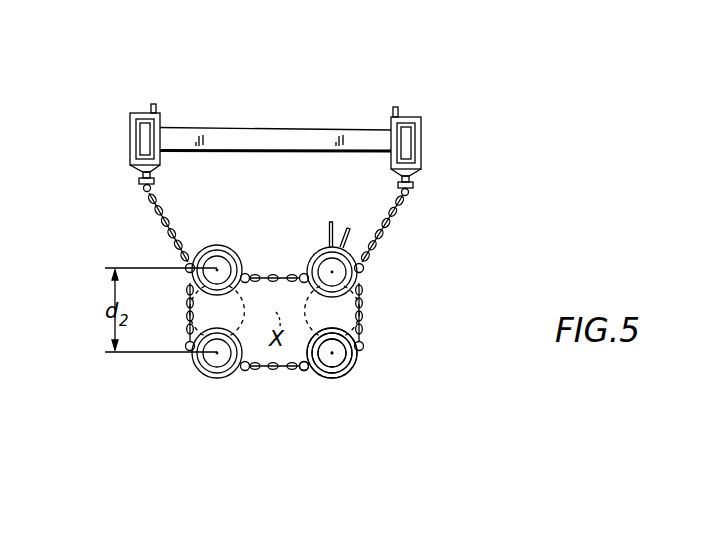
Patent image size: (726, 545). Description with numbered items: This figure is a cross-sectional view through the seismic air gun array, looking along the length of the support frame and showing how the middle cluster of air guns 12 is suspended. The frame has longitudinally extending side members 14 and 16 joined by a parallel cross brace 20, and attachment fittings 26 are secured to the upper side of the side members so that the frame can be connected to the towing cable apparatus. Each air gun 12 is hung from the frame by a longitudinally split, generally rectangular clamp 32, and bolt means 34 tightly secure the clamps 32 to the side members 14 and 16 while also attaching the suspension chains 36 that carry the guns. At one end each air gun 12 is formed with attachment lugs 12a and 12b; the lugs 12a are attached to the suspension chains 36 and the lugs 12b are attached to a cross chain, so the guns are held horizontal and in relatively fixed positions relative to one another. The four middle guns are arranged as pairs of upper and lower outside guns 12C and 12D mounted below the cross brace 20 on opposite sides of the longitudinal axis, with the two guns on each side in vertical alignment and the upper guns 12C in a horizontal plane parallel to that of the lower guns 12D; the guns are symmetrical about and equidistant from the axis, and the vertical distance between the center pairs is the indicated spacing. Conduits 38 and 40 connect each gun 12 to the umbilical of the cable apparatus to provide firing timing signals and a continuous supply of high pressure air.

The air gun 12 is at (354, 368).
The attachment lug 12a is at (312, 374).
The attachment lug 12b is at (360, 340).
The upper outside gun 12C is at (358, 278).
The lower outside gun 12D is at (213, 378).
The side member 14 is at (421, 126).
The side member 16 is at (160, 121).
The cross brace 20 is at (303, 128).
The attachment fitting 26 is at (400, 107).
The clamp 32 is at (130, 131).
The bolt means 34 is at (139, 178).
The suspension chain 36 is at (274, 274).
The conduit 38 is at (326, 223).
The conduit 40 is at (350, 225).